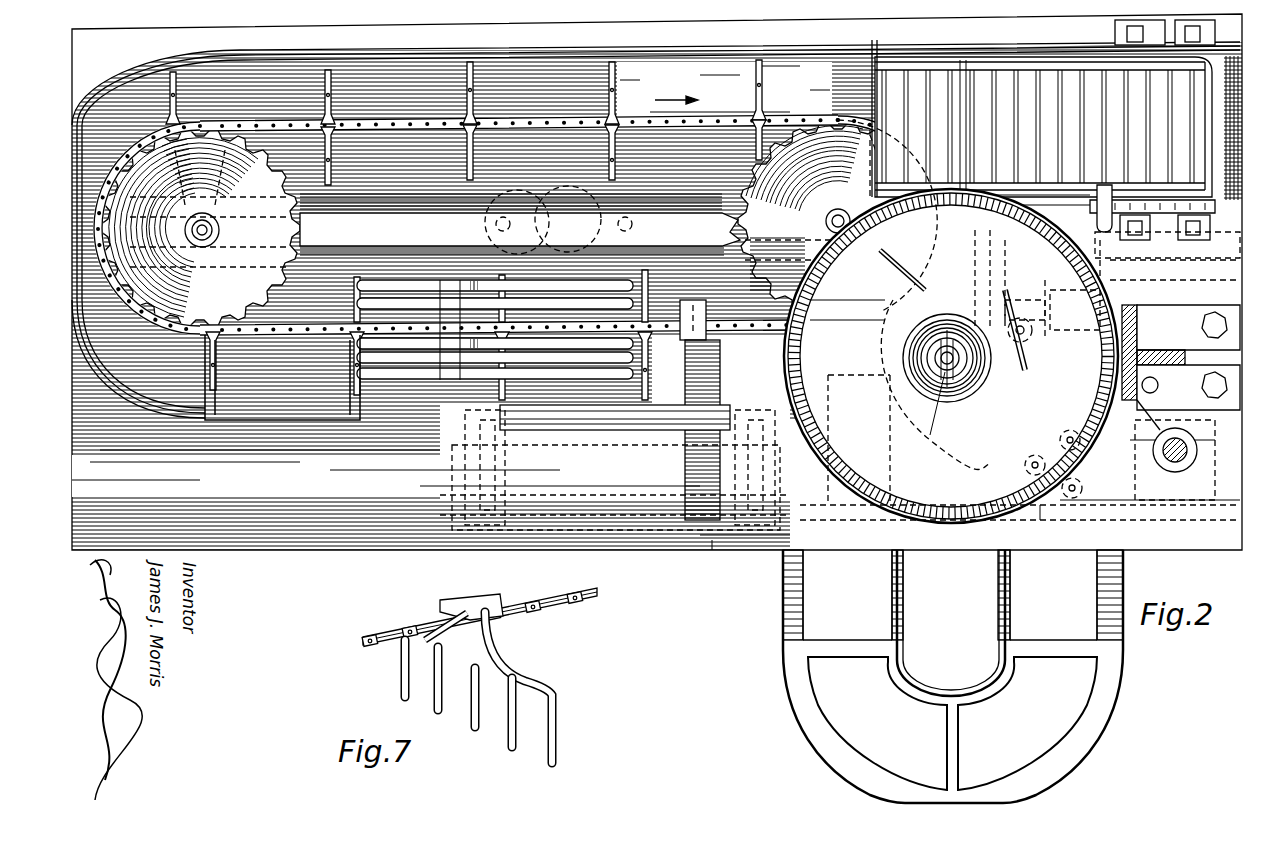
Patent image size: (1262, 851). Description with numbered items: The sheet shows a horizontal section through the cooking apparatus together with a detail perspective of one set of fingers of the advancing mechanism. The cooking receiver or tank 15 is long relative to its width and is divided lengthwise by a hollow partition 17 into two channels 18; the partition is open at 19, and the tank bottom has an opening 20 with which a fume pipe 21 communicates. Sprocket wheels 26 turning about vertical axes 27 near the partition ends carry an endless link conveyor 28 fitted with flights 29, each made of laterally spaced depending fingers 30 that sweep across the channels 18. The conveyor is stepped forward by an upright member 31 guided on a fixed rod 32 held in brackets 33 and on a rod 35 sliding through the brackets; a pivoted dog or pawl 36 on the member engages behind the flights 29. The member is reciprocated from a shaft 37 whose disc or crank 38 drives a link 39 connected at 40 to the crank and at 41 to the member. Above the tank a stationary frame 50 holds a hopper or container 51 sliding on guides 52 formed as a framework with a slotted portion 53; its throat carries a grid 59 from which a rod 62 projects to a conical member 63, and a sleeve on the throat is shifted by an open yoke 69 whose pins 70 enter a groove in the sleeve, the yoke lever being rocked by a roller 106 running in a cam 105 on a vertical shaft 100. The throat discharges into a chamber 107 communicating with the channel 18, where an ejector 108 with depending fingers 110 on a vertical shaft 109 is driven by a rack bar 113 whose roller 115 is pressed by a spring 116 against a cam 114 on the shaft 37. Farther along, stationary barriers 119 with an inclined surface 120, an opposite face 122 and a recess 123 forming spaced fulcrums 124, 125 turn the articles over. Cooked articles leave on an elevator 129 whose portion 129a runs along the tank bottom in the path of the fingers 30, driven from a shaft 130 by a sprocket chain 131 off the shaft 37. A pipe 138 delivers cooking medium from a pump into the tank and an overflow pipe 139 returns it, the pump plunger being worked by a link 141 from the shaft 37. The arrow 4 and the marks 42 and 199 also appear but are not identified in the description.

In FIG. 2, the direction arrow 4 is at (1232, 448).
In FIG. 2, the cooking receiver or tank 15 is at (158, 374).
In FIG. 2, the hollow partition 17 is at (403, 200).
In FIG. 2, the channels 18 is at (440, 80).
In FIG. 2, the opening in partition 19 is at (468, 217).
In FIG. 2, the bottom opening 20 is at (575, 214).
In FIG. 2, the pipe 21 is at (607, 193).
In FIG. 2, the sprocket wheels 26 is at (845, 110).
In FIG. 2, the vertical axes 27 is at (203, 226).
In FIG. 2, the endless conveyor 28 is at (560, 118).
In FIG. 7, the endless conveyor 28 is at (590, 595).
In FIG. 2, the flights 29 is at (753, 122).
In FIG. 7, the flights 29 is at (553, 688).
In FIG. 2, the depending fingers 30 is at (760, 90).
In FIG. 7, the depending fingers 30 is at (400, 693).
In FIG. 2, the upright member 31 is at (718, 373).
In FIG. 2, the bar or rod 32 is at (592, 420).
In FIG. 2, the brackets or bearings 33 is at (462, 455).
In FIG. 2, the bar or rod 35 is at (572, 512).
In FIG. 2, the dog or pawl 36 is at (700, 303).
In FIG. 2, the shaft 37 is at (1157, 298).
In FIG. 2, the disc or crank 38 is at (1188, 533).
In FIG. 2, the link 39 is at (848, 540).
In FIG. 2, the link connection to crank 40 is at (1228, 537).
In FIG. 2, the link connection to member 41 is at (727, 550).
In FIG. 2, the cross member 42 is at (1057, 524).
In FIG. 2, the frame 50 is at (1188, 335).
In FIG. 2, the hopper or container 51 is at (857, 453).
In FIG. 2, the guides 52 is at (1100, 593).
In FIG. 2, the open or slotted portion 53 is at (952, 670).
In FIG. 2, the grid 59 is at (947, 358).
In FIG. 2, the rod 62 is at (947, 387).
In FIG. 2, the conical member 63 is at (937, 380).
In FIG. 2, the open yoke 69 is at (890, 343).
In FIG. 2, the pins 70 is at (887, 370).
In FIG. 2, the vertical shaft 100 is at (1172, 412).
In FIG. 2, the cam 105 is at (1193, 433).
In FIG. 2, the roller 106 is at (1188, 361).
In FIG. 2, the chamber 107 is at (980, 450).
In FIG. 2, the ejector 108 is at (1027, 347).
In FIG. 2, the vertical shaft 109 is at (1007, 273).
In FIG. 2, the depending fingers 110 is at (1023, 367).
In FIG. 2, the rack bar 113 is at (935, 280).
In FIG. 2, the cam 114 is at (1122, 300).
In FIG. 2, the roller 115 is at (1075, 310).
In FIG. 2, the spring 116 is at (1049, 323).
In FIG. 2, the stationary barriers 119 is at (425, 415).
In FIG. 2, the inclined surface 120 is at (613, 298).
In FIG. 2, the face 122 is at (410, 317).
In FIG. 2, the recess 123 is at (500, 292).
In FIG. 2, the fulcrum 124 is at (532, 437).
In FIG. 2, the fulcrum 125 is at (453, 410).
In FIG. 2, the elevator 129 is at (1120, 80).
In FIG. 2, the horizontal portion of elevator 129a is at (980, 73).
In FIG. 2, the shaft 130 is at (1197, 30).
In FIG. 2, the sprocket chain 131 is at (1147, 197).
In FIG. 2, the pipe 138 is at (1100, 190).
In FIG. 2, the overflow pipe 139 is at (1010, 217).
In FIG. 2, the link 141 is at (1140, 277).
In FIG. 2, the guide plate 199 is at (1180, 250).